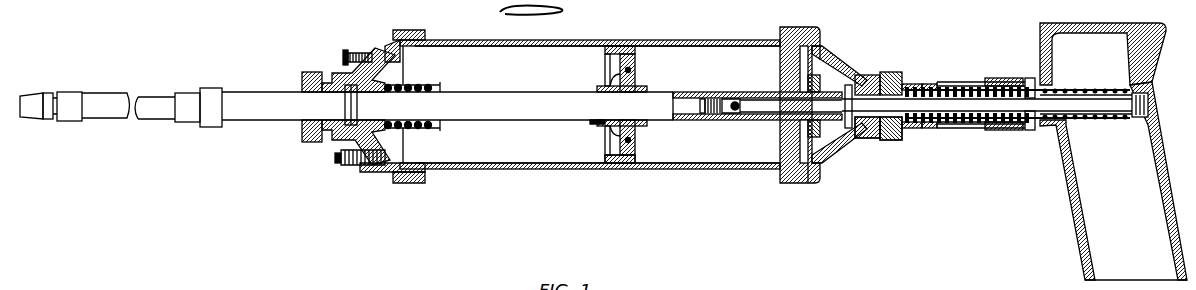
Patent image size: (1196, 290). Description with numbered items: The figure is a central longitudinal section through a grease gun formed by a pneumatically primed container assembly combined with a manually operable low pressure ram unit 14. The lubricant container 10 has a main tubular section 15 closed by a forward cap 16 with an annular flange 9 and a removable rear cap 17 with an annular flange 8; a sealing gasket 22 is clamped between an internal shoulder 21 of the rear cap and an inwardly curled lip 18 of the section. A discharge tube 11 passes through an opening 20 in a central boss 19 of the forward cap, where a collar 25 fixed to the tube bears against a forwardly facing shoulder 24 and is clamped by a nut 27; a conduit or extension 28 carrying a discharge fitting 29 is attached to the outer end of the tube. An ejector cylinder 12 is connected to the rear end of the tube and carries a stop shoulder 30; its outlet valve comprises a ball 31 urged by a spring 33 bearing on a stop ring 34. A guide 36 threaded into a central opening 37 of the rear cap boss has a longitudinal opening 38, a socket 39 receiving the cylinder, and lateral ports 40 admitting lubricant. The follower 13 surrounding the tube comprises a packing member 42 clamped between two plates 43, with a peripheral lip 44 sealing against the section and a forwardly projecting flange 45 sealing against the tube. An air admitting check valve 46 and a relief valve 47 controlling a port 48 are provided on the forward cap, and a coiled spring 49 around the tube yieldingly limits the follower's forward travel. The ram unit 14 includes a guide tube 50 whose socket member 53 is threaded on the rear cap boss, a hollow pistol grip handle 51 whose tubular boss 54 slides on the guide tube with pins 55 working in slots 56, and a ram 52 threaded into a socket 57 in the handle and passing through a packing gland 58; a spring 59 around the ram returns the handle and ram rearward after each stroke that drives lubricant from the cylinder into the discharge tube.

The annular flange 8 is at (795, 27).
The annular flange 9 is at (413, 30).
The lubricant container 10 is at (693, 34).
The discharge tube 11 is at (532, 87).
The ejector cylinder 12 is at (756, 83).
The follower 13 is at (620, 46).
The manually operable ram unit 14 is at (978, 80).
The main tubular section 15 is at (659, 40).
The forward cap 16 is at (384, 172).
The rear cap 17 is at (842, 72).
The inwardly curled lip 18 is at (800, 52).
The central boss 19 is at (333, 74).
The opening 20 is at (324, 137).
The internal shoulder 21 is at (818, 48).
The sealing gasket 22 is at (808, 183).
The forwardly facing shoulder 24 is at (357, 96).
The collar 25 is at (345, 106).
The nut 27 is at (302, 86).
The conduit or extension 28 is at (104, 100).
The discharge fitting 29 is at (35, 100).
The stop shoulder 30 is at (808, 88).
The ball 31 is at (737, 118).
The spring 33 is at (716, 98).
The stop ring 34 is at (704, 120).
The guide 36 is at (808, 131).
The central opening 37 is at (866, 138).
The longitudinal opening 38 is at (888, 72).
The socket 39 is at (860, 75).
The lateral ports 40 is at (848, 130).
The packing member 42 is at (636, 76).
The plates 43 is at (636, 140).
The lip or flange 44 is at (618, 170).
The forwardly projecting flange 45 is at (604, 135).
The air admitting check valve 46 is at (342, 166).
The relief valve 47 is at (345, 50).
The port 48 is at (387, 48).
The coiled spring 49 is at (442, 85).
The guide tube 50 is at (928, 128).
The handle 51 is at (1075, 210).
The ram 52 is at (958, 128).
The socket member 53 is at (908, 84).
The tubular boss 54 is at (1010, 78).
The pins 55 is at (1028, 130).
The slots 56 is at (986, 128).
The socket 57 is at (1150, 104).
The packing gland 58 is at (892, 140).
The spring 59 is at (1106, 91).